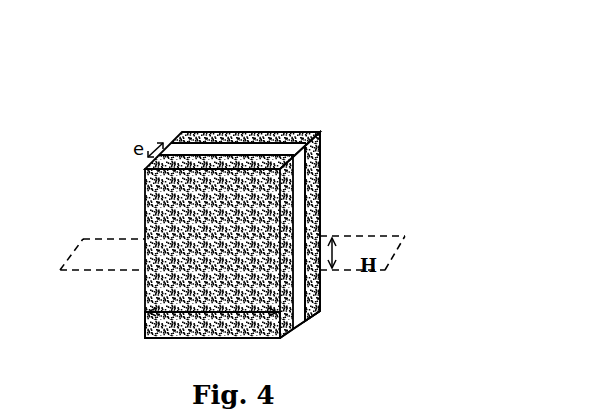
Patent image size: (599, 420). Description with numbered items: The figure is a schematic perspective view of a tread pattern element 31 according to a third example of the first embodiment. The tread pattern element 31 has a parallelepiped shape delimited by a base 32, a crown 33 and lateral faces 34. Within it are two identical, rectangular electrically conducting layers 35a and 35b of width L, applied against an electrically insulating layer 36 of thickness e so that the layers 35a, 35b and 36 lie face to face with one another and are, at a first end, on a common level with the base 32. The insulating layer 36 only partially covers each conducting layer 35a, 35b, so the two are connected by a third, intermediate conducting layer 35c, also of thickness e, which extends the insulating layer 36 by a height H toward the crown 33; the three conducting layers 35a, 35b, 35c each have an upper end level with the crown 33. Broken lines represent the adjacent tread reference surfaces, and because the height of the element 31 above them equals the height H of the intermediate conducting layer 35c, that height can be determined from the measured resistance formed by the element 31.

The tread pattern element 31 is at (366, 104).
The base 32 is at (287, 129).
The crown 33 is at (170, 341).
The lateral faces 34 is at (223, 262).
The electrically conducting layer 35a is at (287, 340).
The electrically conducting layer 35b is at (313, 316).
The intermediate conducting layer 35c is at (305, 319).
The electrically insulating layer 36 is at (298, 185).